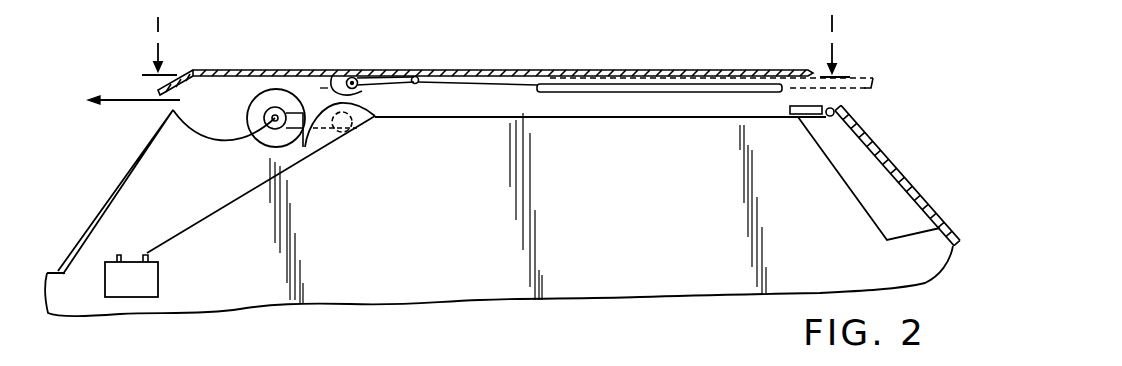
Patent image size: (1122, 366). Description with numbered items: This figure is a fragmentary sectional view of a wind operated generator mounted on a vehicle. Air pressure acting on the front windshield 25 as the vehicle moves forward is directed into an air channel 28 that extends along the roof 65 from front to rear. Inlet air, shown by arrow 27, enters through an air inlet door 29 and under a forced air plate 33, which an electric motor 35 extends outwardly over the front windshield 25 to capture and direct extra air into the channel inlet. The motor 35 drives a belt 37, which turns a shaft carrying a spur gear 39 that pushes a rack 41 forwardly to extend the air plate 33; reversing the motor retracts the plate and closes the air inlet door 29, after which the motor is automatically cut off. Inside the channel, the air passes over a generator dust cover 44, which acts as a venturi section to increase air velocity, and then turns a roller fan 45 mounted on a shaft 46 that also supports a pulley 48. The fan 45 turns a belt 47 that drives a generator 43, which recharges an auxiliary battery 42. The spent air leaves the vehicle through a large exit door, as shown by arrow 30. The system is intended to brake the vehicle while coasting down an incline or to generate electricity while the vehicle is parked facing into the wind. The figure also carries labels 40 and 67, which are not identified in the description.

The front windshield 25 is at (863, 192).
The arrow 27 is at (845, 104).
The air channel 28 is at (535, 107).
The air inlet door 29 is at (792, 116).
The arrow 30 is at (135, 101).
The forced air plate 33 is at (618, 84).
The electric motor 35 is at (342, 72).
The belt 37 is at (397, 75).
The spur gear 39 is at (418, 77).
The link 40 is at (413, 86).
The rack 41 is at (484, 75).
The auxiliary battery 42 is at (157, 282).
The generator 43 is at (353, 133).
The generator dust cover 44 is at (376, 118).
The roller fan 45 is at (256, 100).
The shaft 46 is at (272, 125).
The belt 47 is at (313, 110).
The pulley 48 is at (272, 119).
The roof 65 is at (546, 70).
The phantom flap position 67 is at (874, 80).